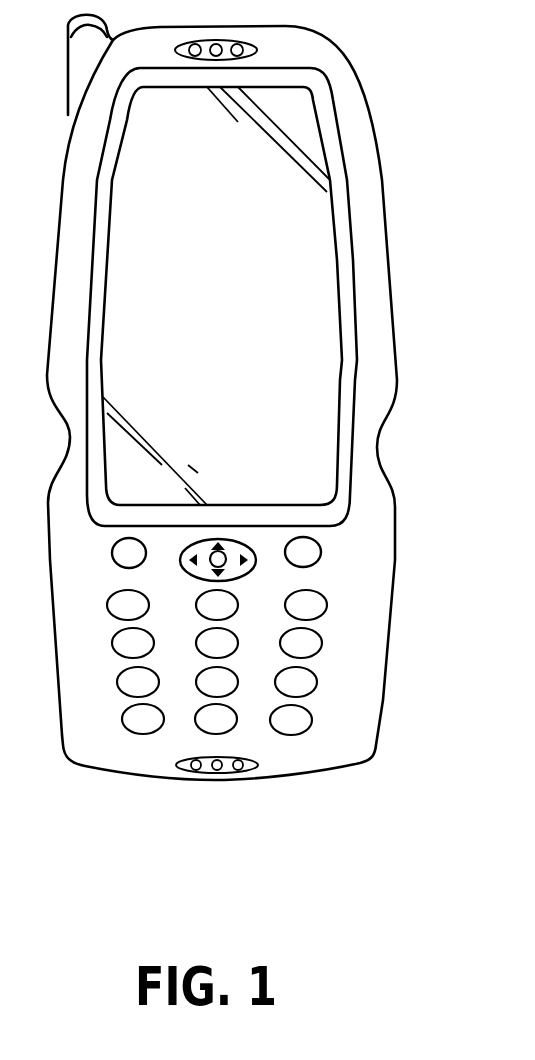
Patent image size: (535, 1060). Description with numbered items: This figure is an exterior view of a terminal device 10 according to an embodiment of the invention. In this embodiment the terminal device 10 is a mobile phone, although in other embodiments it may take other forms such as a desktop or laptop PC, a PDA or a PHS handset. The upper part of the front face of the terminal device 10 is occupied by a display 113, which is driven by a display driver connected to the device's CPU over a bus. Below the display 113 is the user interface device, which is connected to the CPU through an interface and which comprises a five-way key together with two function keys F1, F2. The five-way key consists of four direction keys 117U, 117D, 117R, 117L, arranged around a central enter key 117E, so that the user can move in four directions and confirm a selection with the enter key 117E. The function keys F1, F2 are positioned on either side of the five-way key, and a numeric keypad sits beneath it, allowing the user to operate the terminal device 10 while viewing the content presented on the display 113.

The terminal device 10 is at (107, 806).
The display 113 is at (295, 250).
The enter key 117E is at (204, 550).
The direction key 117U is at (221, 546).
The direction key 117R is at (244, 550).
The direction key 117L is at (190, 558).
The direction key 117D is at (223, 576).
The function key F1 is at (112, 553).
The function key F2 is at (321, 553).